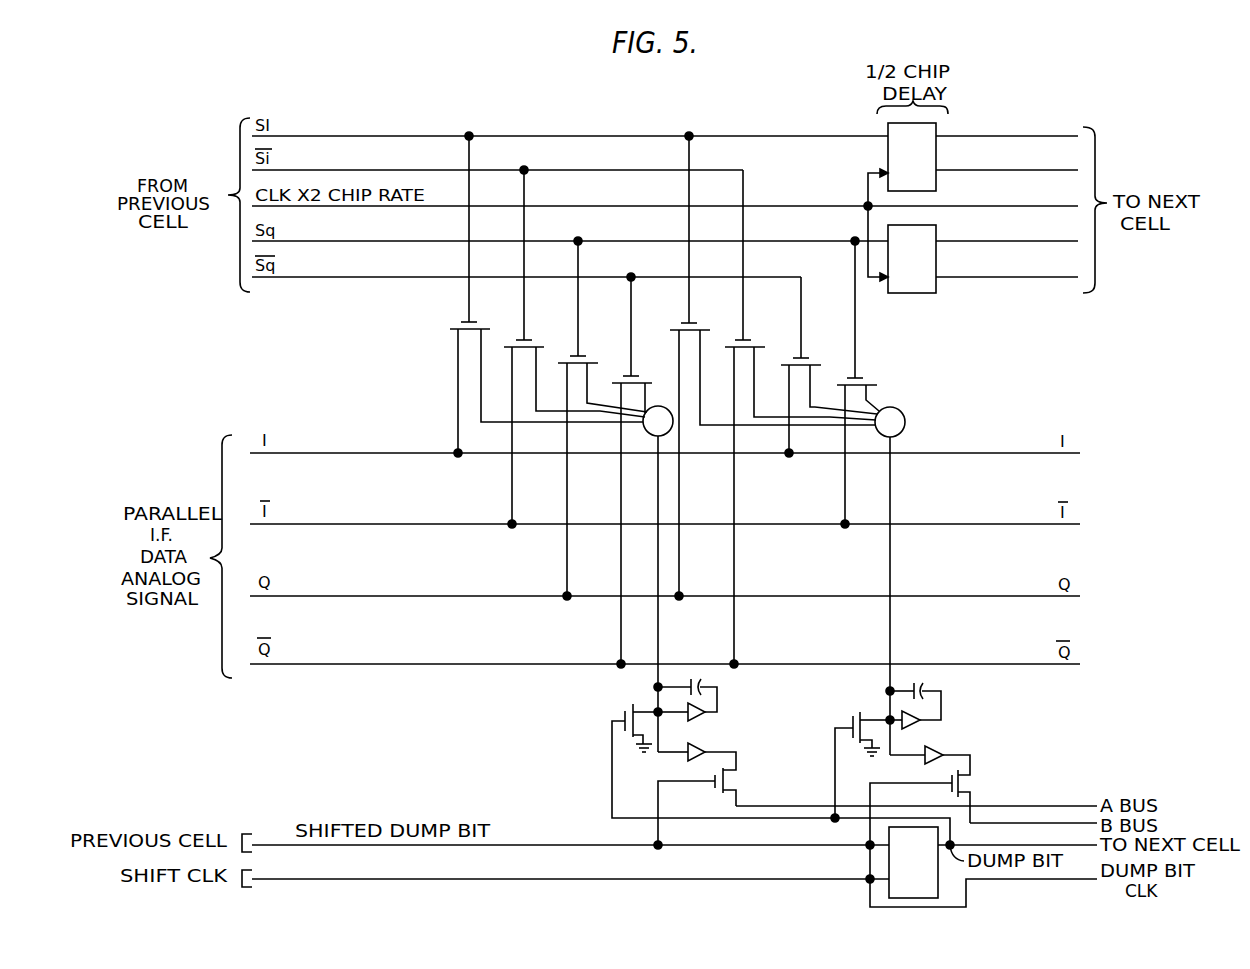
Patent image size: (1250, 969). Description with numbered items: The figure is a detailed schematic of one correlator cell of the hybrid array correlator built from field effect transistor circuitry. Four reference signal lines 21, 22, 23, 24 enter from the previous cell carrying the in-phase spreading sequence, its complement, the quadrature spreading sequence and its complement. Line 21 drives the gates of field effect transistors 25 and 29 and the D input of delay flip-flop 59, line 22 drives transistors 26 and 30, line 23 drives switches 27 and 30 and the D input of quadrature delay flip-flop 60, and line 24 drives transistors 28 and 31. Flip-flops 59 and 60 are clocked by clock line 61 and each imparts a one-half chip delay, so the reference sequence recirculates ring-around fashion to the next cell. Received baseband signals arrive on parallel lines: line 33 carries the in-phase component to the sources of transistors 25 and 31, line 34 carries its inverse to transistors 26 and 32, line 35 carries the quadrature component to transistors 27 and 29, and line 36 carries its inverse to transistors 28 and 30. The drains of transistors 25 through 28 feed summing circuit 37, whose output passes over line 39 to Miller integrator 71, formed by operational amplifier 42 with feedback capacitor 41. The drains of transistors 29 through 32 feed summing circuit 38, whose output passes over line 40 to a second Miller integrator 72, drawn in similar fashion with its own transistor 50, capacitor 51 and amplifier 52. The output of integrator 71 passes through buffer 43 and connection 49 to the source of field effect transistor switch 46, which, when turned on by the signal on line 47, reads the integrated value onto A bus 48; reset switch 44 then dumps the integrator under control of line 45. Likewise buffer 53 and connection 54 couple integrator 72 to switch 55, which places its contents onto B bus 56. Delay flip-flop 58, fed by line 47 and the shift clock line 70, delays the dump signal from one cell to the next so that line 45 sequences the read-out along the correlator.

The reference signal line 21 is at (428, 134).
The reference signal line 22 is at (445, 170).
The reference signal line 23 is at (453, 241).
The reference signal line 24 is at (445, 277).
The field effect transistor 25 is at (461, 324).
The field effect transistor 26 is at (530, 345).
The field effect transistor switch 27 is at (586, 362).
The field effect transistor 28 is at (640, 382).
The field effect transistor 29 is at (693, 329).
The field effect transistor 30 is at (748, 346).
The field effect transistor 31 is at (812, 364).
The field effect transistor 32 is at (868, 382).
The signal line 33 is at (395, 452).
The signal line 34 is at (417, 523).
The signal line 35 is at (440, 595).
The signal line 36 is at (468, 663).
The summing circuit 37 is at (663, 406).
The summing circuit 38 is at (905, 416).
The output line 39 is at (658, 632).
The signal line 40 is at (890, 641).
The feedback capacitor 41 is at (696, 678).
The operational amplifier 42 is at (699, 719).
The buffer 43 is at (686, 758).
The reset field effect transistor switch 44 is at (626, 712).
The control line 45 is at (612, 788).
The field effect transistor switch 46 is at (735, 786).
The signal line 47 is at (776, 848).
The A bus 48 is at (786, 805).
The buffer output connection 49 is at (740, 760).
The reset transistor 50 is at (856, 716).
The storage capacitor 51 is at (920, 680).
The buffer amplifier 52 is at (912, 727).
The buffer 53 is at (922, 761).
The buffer output connection 54 is at (971, 760).
The field effect transistor switch 55 is at (967, 778).
The B bus 56 is at (1003, 823).
The delay flip-flop 58 is at (940, 884).
The delay flip-flop 59 is at (936, 128).
The quadrature delay flip-flop 60 is at (915, 293).
The clock line 61 is at (455, 206).
The shift clock line 70 is at (457, 878).
The Miller integrator 71 is at (763, 717).
The Miller integrator 72 is at (992, 717).